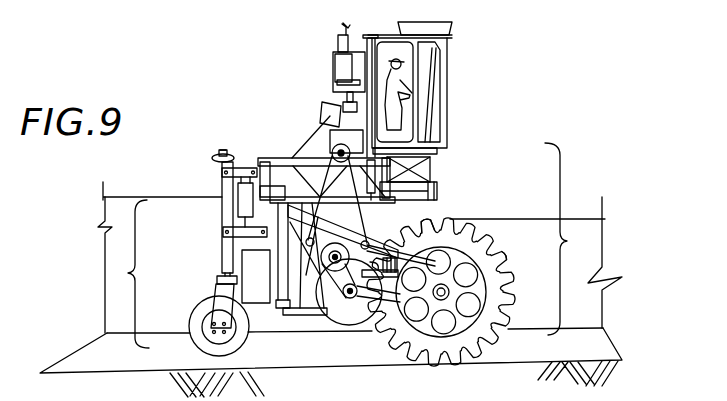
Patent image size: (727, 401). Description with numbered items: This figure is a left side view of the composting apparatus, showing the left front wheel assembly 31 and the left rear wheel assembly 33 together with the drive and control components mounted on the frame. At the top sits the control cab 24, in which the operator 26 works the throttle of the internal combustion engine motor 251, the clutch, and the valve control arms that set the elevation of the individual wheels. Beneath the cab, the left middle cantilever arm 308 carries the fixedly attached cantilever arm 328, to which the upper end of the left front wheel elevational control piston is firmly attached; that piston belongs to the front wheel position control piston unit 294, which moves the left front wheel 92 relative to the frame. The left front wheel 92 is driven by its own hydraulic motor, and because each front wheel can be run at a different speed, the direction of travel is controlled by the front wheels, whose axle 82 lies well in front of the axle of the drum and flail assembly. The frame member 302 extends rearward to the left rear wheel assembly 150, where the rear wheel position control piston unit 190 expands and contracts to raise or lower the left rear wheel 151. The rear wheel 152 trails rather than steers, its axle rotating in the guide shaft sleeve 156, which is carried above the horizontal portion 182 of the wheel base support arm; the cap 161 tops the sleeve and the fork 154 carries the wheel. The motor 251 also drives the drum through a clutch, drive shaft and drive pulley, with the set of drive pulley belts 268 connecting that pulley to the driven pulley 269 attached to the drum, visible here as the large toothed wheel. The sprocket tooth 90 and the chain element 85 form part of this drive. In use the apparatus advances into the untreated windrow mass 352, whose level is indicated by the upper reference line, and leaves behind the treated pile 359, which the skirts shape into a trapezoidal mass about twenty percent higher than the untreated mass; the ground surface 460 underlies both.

The control cab 24 is at (448, 52).
The operator 26 is at (411, 95).
The cantilever arm 328 is at (424, 142).
The left middle cantilever arm 308 is at (437, 151).
The front wheel position control piston unit 294 is at (429, 175).
The internal combustion engine motor 251 is at (347, 133).
The main frame 302 is at (282, 165).
The post cap 161 is at (257, 172).
The left rear wheel assembly 150 is at (212, 181).
The rear wheel position control piston unit 190 is at (222, 197).
The guide shaft sleeve 156 is at (222, 216).
The horizontal portion of wheel base support arm 182 is at (226, 262).
The caster fork 154 is at (213, 300).
The rear wheel 152 is at (191, 318).
The left rear wheel 151 is at (203, 337).
The drive pulley belts 268 is at (280, 315).
The driven pulley 269 is at (350, 310).
The drive chain 85 is at (463, 263).
The sprocket tooth crown 90 is at (447, 220).
The left front wheel 92 is at (505, 263).
The axle 82 is at (400, 296).
The mass 352 is at (597, 225).
The left front wheel assembly 31 is at (566, 239).
The pile 359 is at (110, 253).
The left rear wheel assembly 33 is at (129, 274).
The ground surface 460 is at (603, 338).